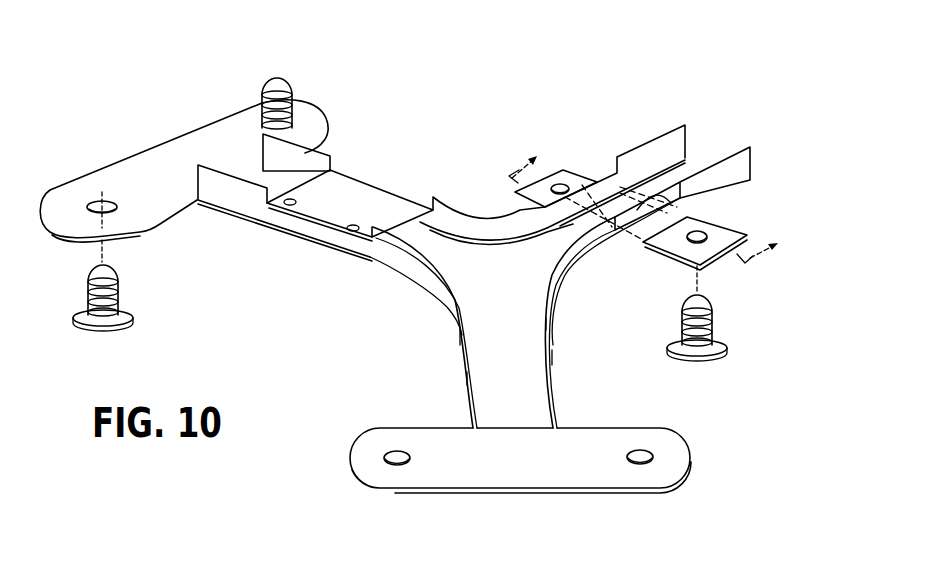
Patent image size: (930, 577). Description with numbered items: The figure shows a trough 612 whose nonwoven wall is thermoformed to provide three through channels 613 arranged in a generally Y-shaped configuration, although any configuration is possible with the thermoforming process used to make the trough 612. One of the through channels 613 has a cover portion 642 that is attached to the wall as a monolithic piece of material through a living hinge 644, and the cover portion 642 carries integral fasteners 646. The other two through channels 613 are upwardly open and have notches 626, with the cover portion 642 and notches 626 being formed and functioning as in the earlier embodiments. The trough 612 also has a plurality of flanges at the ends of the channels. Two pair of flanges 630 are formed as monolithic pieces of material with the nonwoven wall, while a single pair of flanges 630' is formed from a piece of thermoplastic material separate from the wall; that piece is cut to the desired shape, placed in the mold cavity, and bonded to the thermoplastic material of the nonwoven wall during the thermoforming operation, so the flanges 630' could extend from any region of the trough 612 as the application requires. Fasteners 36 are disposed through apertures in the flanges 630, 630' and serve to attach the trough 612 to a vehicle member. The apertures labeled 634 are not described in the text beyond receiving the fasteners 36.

The fasteners 36 is at (290, 83).
The trough 612 is at (472, 167).
The through channels 613 is at (263, 182).
The notches 626 is at (462, 333).
The flanges 630 is at (401, 283).
The flanges 630' is at (636, 251).
The mounting hole 634 is at (100, 205).
The cover portion 642 is at (350, 193).
The living hinge 644 is at (380, 186).
The integral fasteners 646 is at (330, 232).